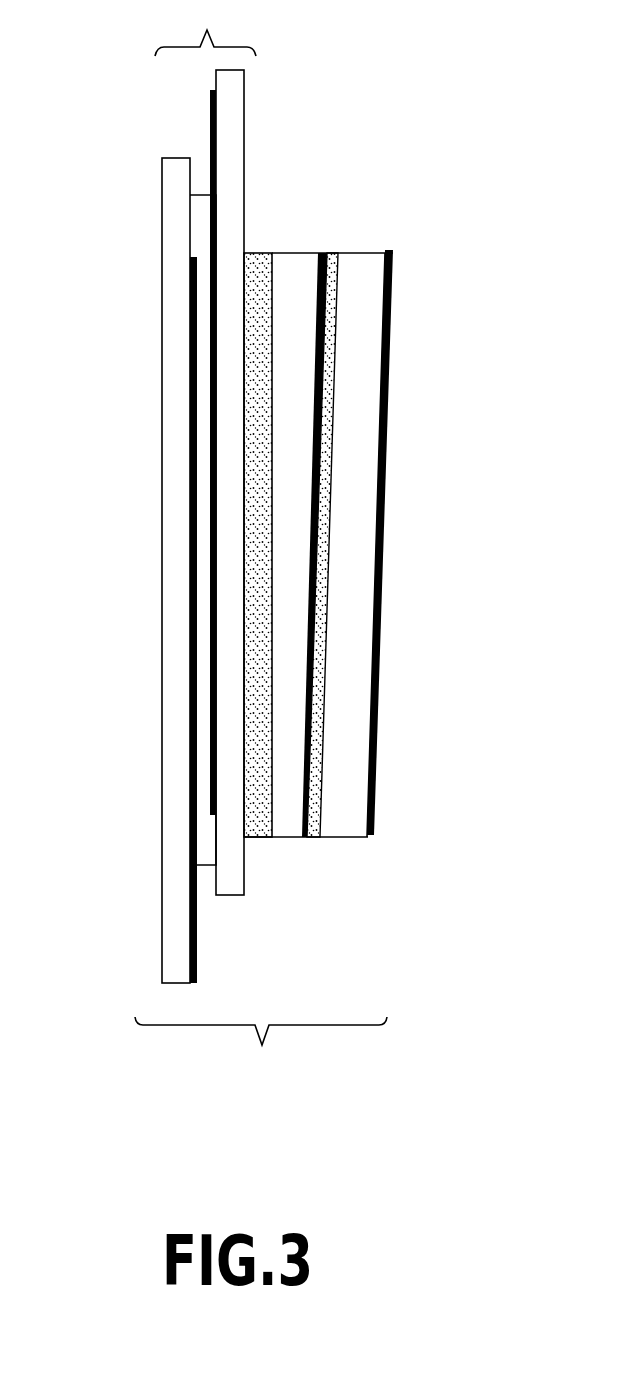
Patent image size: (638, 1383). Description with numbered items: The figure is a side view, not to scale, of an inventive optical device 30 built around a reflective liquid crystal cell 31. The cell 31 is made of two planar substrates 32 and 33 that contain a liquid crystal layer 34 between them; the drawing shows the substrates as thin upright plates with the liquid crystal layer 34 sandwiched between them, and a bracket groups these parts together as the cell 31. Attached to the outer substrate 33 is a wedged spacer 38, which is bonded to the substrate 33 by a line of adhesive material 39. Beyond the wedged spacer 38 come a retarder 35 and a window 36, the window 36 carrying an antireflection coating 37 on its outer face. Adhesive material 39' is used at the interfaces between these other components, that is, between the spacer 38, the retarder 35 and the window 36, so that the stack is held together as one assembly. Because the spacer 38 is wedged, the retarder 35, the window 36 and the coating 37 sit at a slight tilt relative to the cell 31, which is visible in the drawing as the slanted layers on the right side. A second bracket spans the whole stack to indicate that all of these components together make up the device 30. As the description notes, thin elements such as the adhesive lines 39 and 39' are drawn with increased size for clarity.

The device 30 is at (261, 1054).
The reflective liquid crystal cell 31 is at (205, 28).
The planar substrate 32 is at (173, 295).
The planar substrate 33 is at (244, 117).
The liquid crystal layer 34 is at (207, 850).
The retarder 35 is at (310, 803).
The window 36 is at (363, 253).
The antireflection coating 37 is at (375, 763).
The wedged spacer 38 is at (292, 253).
The adhesive material 39 is at (361, 403).
The adhesive material 39' is at (400, 536).